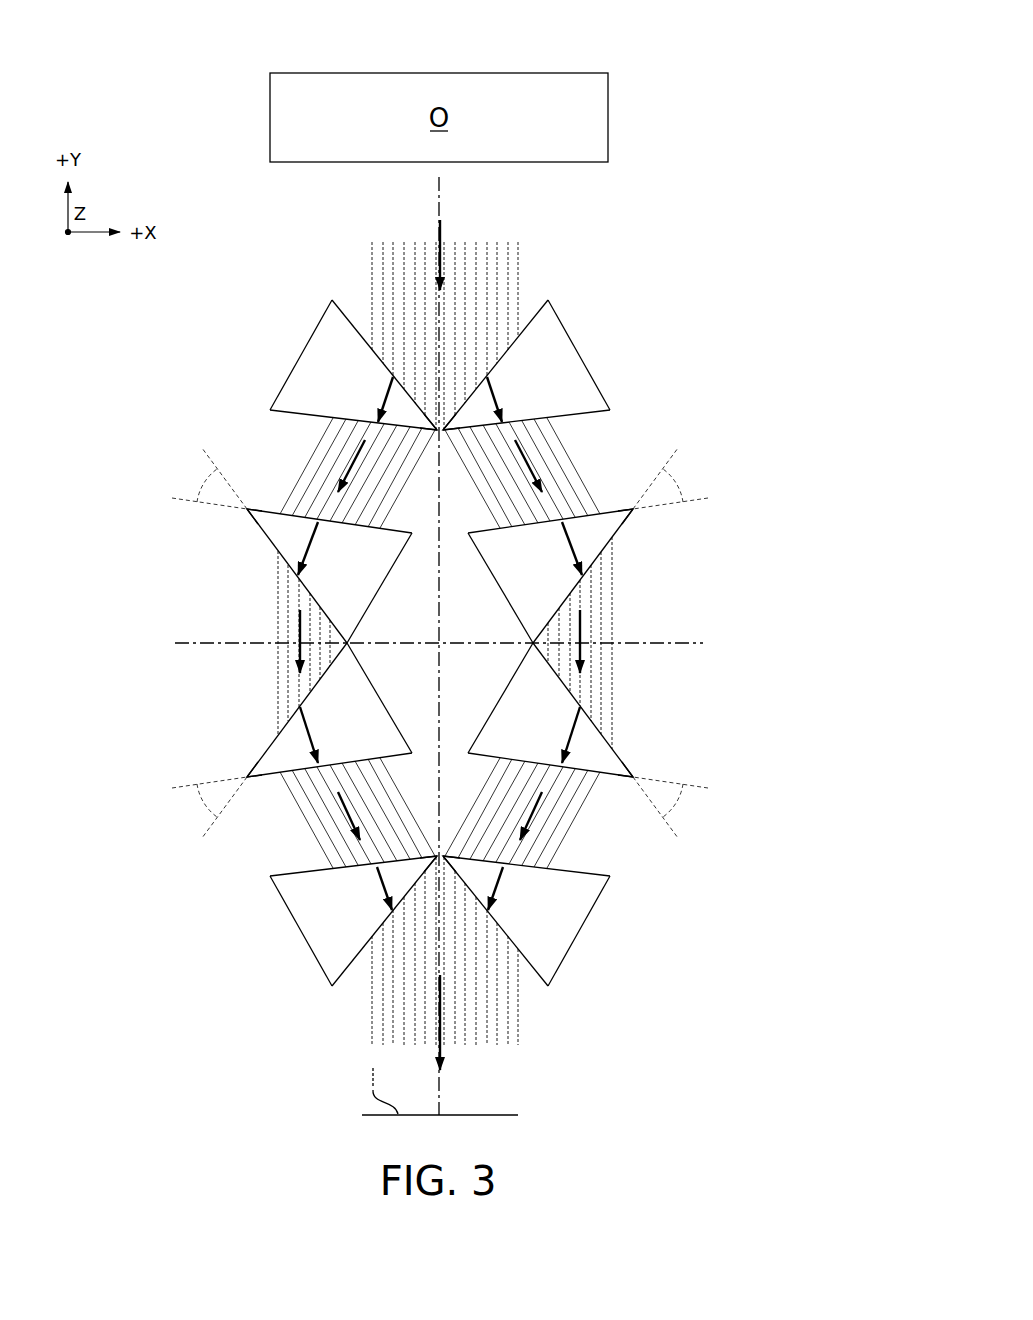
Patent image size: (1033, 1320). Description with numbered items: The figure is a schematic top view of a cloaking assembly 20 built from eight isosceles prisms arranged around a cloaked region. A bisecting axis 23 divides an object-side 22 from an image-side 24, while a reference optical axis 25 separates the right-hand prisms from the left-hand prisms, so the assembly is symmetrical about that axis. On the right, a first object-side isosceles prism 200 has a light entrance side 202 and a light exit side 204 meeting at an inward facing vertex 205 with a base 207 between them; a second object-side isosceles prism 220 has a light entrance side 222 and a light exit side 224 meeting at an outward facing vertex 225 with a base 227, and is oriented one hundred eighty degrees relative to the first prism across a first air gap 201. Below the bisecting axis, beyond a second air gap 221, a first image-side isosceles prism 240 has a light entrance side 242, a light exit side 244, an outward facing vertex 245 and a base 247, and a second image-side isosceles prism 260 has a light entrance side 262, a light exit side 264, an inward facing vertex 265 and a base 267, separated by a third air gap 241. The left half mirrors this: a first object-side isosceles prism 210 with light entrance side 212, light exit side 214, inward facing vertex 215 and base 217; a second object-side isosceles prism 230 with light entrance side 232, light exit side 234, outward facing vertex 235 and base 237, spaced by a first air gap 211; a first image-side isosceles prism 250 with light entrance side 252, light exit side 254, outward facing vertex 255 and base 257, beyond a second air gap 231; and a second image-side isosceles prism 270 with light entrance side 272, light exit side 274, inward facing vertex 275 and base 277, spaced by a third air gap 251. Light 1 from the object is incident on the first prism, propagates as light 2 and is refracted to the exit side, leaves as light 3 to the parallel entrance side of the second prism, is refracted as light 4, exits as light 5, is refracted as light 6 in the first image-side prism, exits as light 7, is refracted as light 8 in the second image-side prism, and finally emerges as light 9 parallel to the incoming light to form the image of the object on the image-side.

The light 1 is at (443, 233).
The light 2 is at (383, 402).
The light 3 is at (348, 468).
The light 4 is at (310, 550).
The light 5 is at (298, 632).
The light 6 is at (308, 735).
The light 7 is at (346, 822).
The light 8 is at (383, 885).
The light 9 is at (441, 1050).
The cloaking assembly 20 is at (823, 125).
The object-side 22 is at (790, 327).
The bisecting axis 23 is at (703, 643).
The image-side 24 is at (716, 1034).
The reference optical axis 25 is at (438, 200).
The first object-side isosceles prism 200 is at (556, 387).
The first air gap 201 is at (675, 409).
The light entrance side 202 is at (523, 332).
The light exit side 204 is at (595, 408).
The inward facing vertex 205 is at (445, 437).
The base 207 is at (550, 303).
The first object-side isosceles prism 210 is at (322, 388).
The first air gap 211 is at (208, 410).
The light entrance side 212 is at (357, 332).
The light exit side 214 is at (285, 408).
The inward facing vertex 215 is at (435, 437).
The base 217 is at (330, 303).
The second object-side isosceles prism 220 is at (633, 553).
The second air gap 221 is at (731, 605).
The light entrance side 222 is at (593, 515).
The light exit side 224 is at (604, 545).
The outward facing vertex 225 is at (633, 509).
The base 227 is at (515, 610).
The second object-side isosceles prism 230 is at (232, 553).
The second air gap 231 is at (144, 569).
The light entrance side 232 is at (287, 515).
The light exit side 234 is at (276, 545).
The outward facing vertex 235 is at (247, 509).
The base 237 is at (365, 610).
The first image-side isosceles prism 240 is at (627, 732).
The third air gap 241 is at (675, 877).
The light entrance side 242 is at (602, 738).
The light exit side 244 is at (608, 774).
The outward facing vertex 245 is at (633, 777).
The base 247 is at (514, 704).
The first image-side isosceles prism 250 is at (259, 734).
The third air gap 251 is at (206, 876).
The light entrance side 252 is at (278, 738).
The light exit side 254 is at (272, 774).
The outward facing vertex 255 is at (247, 777).
The base 257 is at (366, 704).
The second image-side isosceles prism 260 is at (555, 900).
The light entrance side 262 is at (594, 880).
The light exit side 264 is at (523, 953).
The inward facing vertex 265 is at (445, 850).
The base 267 is at (583, 925).
The second image-side isosceles prism 270 is at (297, 890).
The light entrance side 272 is at (286, 880).
The light exit side 274 is at (357, 953).
The inward facing vertex 275 is at (435, 850).
The base 277 is at (332, 986).